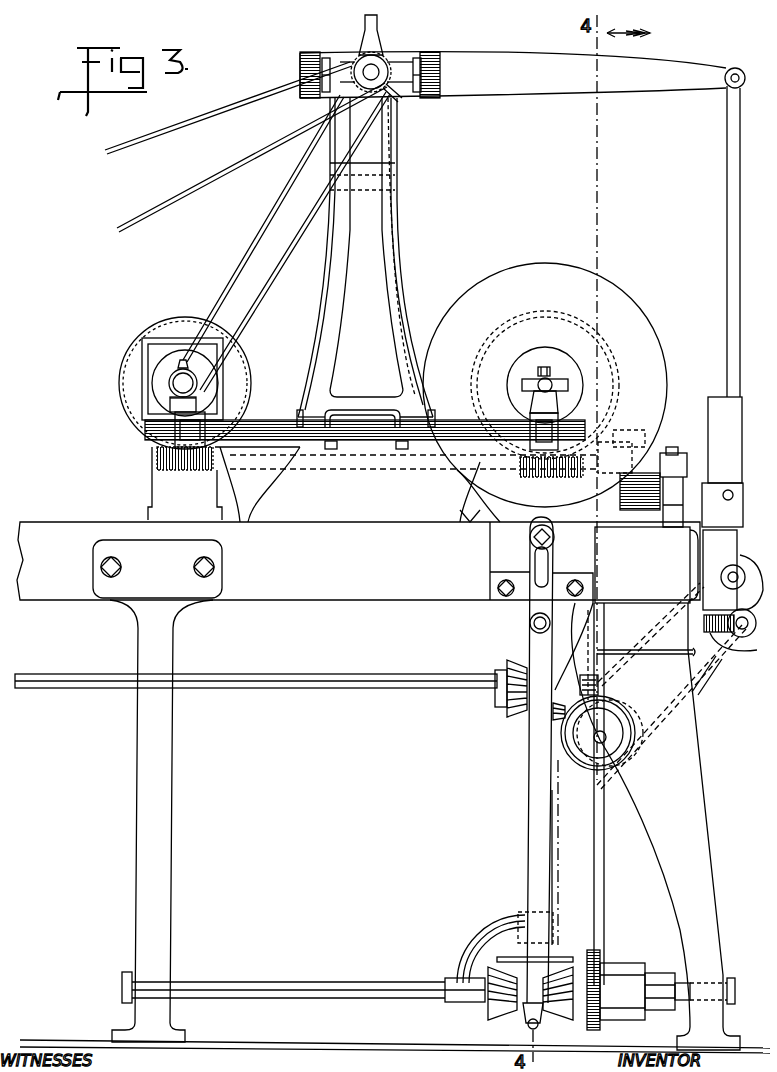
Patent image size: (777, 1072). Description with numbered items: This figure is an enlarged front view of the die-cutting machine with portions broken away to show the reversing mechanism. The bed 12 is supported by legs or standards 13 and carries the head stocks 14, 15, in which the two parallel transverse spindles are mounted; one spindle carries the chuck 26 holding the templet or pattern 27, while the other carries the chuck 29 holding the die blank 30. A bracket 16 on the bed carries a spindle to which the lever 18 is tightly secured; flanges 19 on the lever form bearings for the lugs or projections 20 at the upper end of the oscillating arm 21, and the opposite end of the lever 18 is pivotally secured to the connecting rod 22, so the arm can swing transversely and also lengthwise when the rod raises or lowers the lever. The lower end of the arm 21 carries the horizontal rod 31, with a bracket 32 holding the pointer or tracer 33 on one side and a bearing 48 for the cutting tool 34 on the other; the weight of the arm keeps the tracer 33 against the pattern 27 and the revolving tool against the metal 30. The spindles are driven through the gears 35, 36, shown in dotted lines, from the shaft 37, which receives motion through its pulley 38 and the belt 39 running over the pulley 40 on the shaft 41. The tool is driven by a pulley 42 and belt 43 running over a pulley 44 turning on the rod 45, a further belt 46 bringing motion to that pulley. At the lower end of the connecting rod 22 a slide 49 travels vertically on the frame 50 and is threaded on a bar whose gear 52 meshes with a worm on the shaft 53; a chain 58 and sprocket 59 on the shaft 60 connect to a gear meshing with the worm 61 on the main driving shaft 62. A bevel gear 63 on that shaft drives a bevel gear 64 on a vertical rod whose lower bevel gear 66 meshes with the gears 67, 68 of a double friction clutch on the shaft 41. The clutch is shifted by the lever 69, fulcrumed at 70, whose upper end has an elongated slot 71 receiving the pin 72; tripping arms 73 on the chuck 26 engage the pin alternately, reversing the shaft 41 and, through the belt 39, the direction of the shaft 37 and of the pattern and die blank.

The bed 12 is at (358, 561).
The legs or standards 13 is at (172, 780).
The head stock 14 is at (152, 492).
The head stock 15 is at (480, 528).
The bracket 16 is at (372, 282).
The lever 18 is at (513, 75).
The flanges 19 is at (300, 66).
The lugs or projections 20 is at (325, 58).
The oscillating arm or bracket 21 is at (397, 232).
The connecting rod 22 is at (727, 188).
The chuck 26 is at (660, 352).
The templet or pattern 27 is at (580, 400).
The chuck 29 is at (165, 320).
The die blank 30 is at (211, 379).
The horizontal bar or rod 31 is at (358, 445).
The bracket 32 is at (534, 433).
The pointer or tracer 33 is at (549, 376).
The cutting tool 34 is at (170, 380).
The gear 35 is at (532, 322).
The gear 36 is at (246, 383).
The shaft 37 is at (252, 476).
The pulley 38 is at (660, 452).
The belt 39 is at (606, 850).
The pulley 40 is at (636, 965).
The shaft 41 is at (682, 1000).
The pulley 42 is at (168, 398).
The belt 43 is at (255, 242).
The pulley 44 is at (398, 100).
The rod 45 is at (378, 60).
The belt 46 is at (246, 147).
The bearing 48 is at (205, 404).
The slide 49 is at (722, 505).
The frame 50 is at (712, 397).
The gear 52 is at (671, 686).
The shaft 53 is at (741, 640).
The chain 58 is at (735, 697).
The sprocket 59 is at (594, 770).
The shaft 60 is at (585, 752).
The worm 61 is at (586, 675).
The main driving shaft 62 is at (256, 668).
The bevel gear 63 is at (507, 670).
The bevel gear 64 is at (515, 718).
The bevel gear 66 is at (560, 965).
The bevel gear 67 is at (550, 1020).
The bevel gear 68 is at (495, 1018).
The lever 69 is at (528, 860).
The fulcrum 70 is at (528, 620).
The elongated slot 71 is at (556, 575).
The pin 72 is at (509, 561).
The tripping arm 73 is at (460, 495).